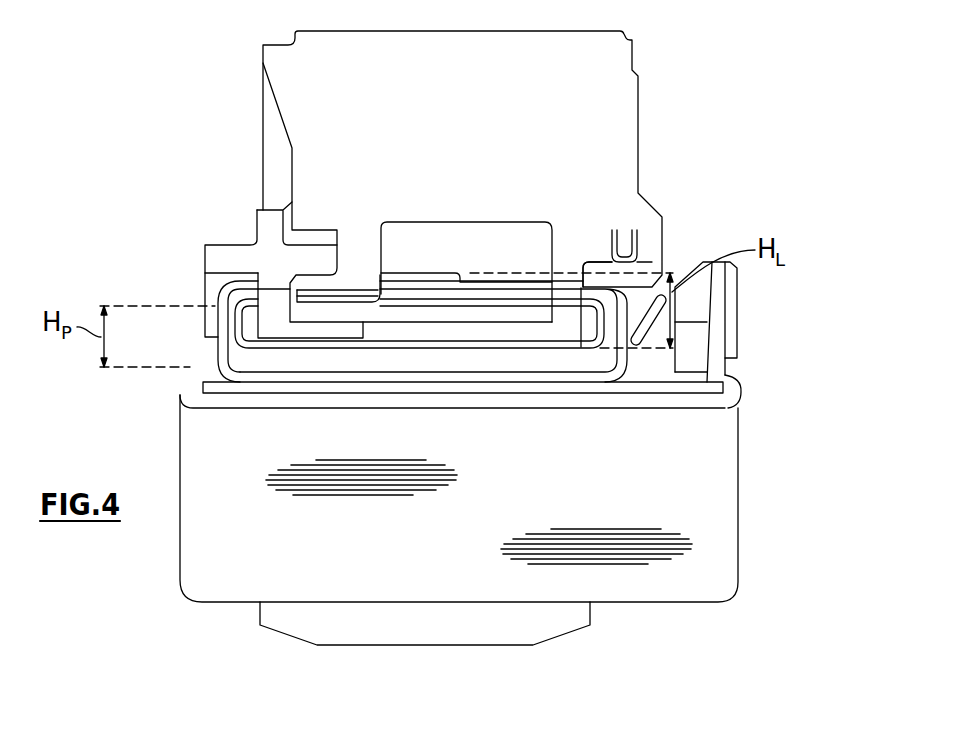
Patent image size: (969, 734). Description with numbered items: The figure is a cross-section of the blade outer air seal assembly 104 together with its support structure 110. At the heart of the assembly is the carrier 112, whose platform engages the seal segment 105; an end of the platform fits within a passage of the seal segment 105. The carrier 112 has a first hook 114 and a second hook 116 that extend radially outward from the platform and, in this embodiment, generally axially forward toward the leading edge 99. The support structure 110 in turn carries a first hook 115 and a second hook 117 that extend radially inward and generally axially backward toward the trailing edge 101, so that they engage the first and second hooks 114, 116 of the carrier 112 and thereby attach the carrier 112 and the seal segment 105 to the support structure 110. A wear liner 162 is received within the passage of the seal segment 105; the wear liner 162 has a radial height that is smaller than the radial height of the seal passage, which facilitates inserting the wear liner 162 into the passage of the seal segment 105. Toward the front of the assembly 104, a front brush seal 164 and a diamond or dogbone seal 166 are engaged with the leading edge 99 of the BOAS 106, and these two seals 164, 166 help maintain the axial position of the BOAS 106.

The BOAS assembly 104 is at (763, 88).
The support structure 110 is at (627, 103).
The carrier 112 is at (226, 250).
The first hook 114 is at (307, 262).
The first hook 115 is at (347, 284).
The second hook 116 is at (612, 243).
The second hook 117 is at (650, 258).
The wear liner 162 is at (243, 318).
The seal segment 105 is at (207, 367).
The trailing edge 101 is at (179, 390).
The leading edge 99 is at (742, 389).
The BOAS 106 is at (741, 414).
The front brush seal 164 is at (735, 322).
The diamond or dogbone seal 166 is at (666, 318).